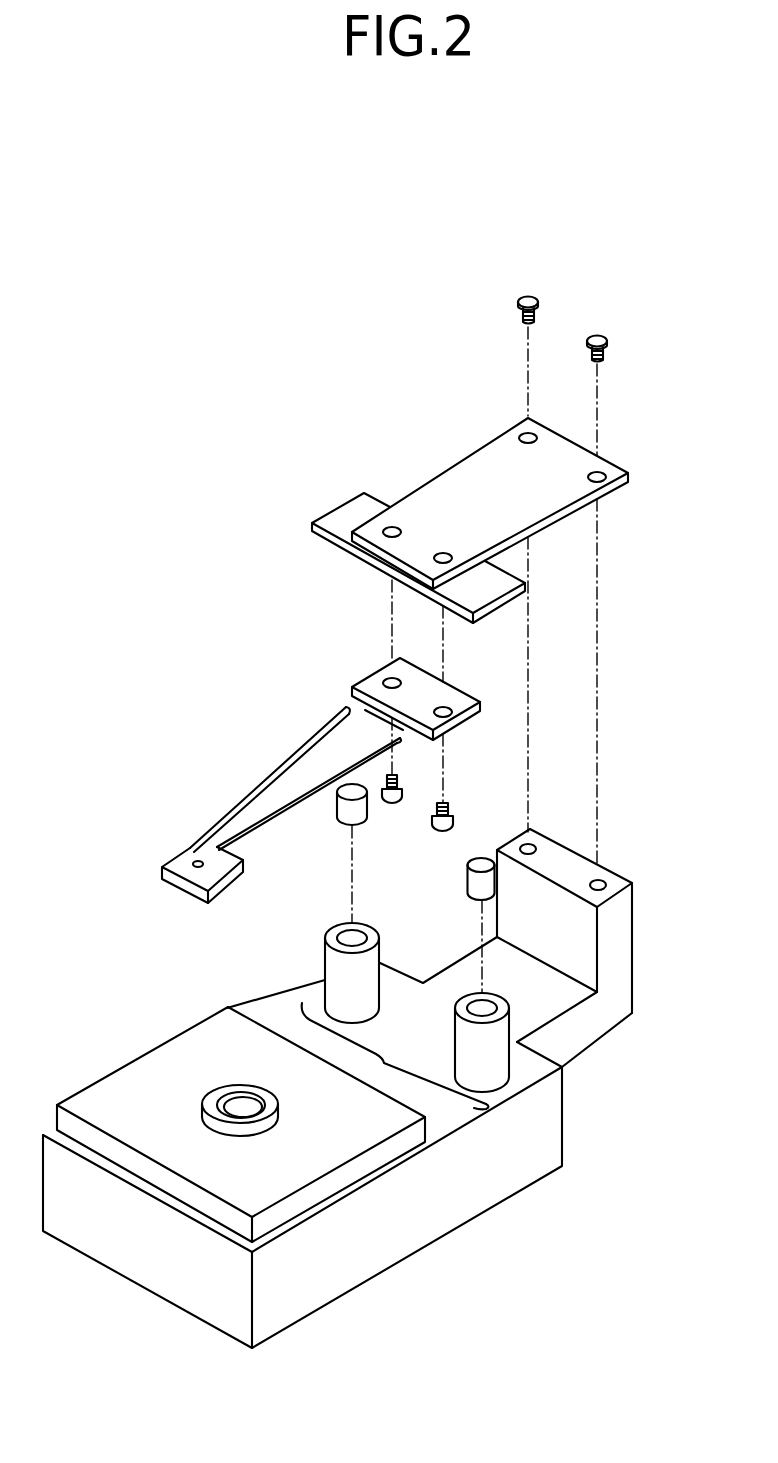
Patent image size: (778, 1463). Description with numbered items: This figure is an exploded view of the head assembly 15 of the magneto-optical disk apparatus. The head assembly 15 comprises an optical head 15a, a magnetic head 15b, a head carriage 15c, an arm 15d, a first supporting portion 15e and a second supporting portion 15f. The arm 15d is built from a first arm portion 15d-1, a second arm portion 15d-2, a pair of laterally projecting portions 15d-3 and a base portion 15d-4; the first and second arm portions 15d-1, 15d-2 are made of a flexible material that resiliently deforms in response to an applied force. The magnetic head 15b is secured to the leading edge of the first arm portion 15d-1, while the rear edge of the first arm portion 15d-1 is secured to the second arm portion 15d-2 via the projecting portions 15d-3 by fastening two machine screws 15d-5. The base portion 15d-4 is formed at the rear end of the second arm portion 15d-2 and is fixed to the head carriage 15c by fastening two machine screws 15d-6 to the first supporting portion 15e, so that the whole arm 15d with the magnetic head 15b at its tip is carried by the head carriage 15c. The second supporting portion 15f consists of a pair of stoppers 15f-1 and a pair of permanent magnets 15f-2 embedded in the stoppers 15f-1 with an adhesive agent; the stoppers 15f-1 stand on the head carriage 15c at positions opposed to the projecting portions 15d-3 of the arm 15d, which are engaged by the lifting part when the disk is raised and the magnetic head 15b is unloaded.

The head assembly 15 is at (287, 291).
The optical head 15a is at (238, 1105).
The magnetic head 15b is at (178, 858).
The head carriage 15c is at (547, 1153).
The arm 15d is at (438, 386).
The first arm portion 15d-1 is at (292, 778).
The second arm portion 15d-2 is at (463, 488).
The laterally projecting portions 15d-3 is at (312, 525).
The base portion 15d-4 is at (563, 457).
The machine screws 15d-5 is at (430, 823).
The machine screws 15d-6 is at (535, 295).
The first supporting portion 15e is at (633, 883).
The second supporting portion 15f is at (383, 1063).
The stoppers 15f-1 is at (325, 970).
The permanent magnets 15f-2 is at (478, 887).